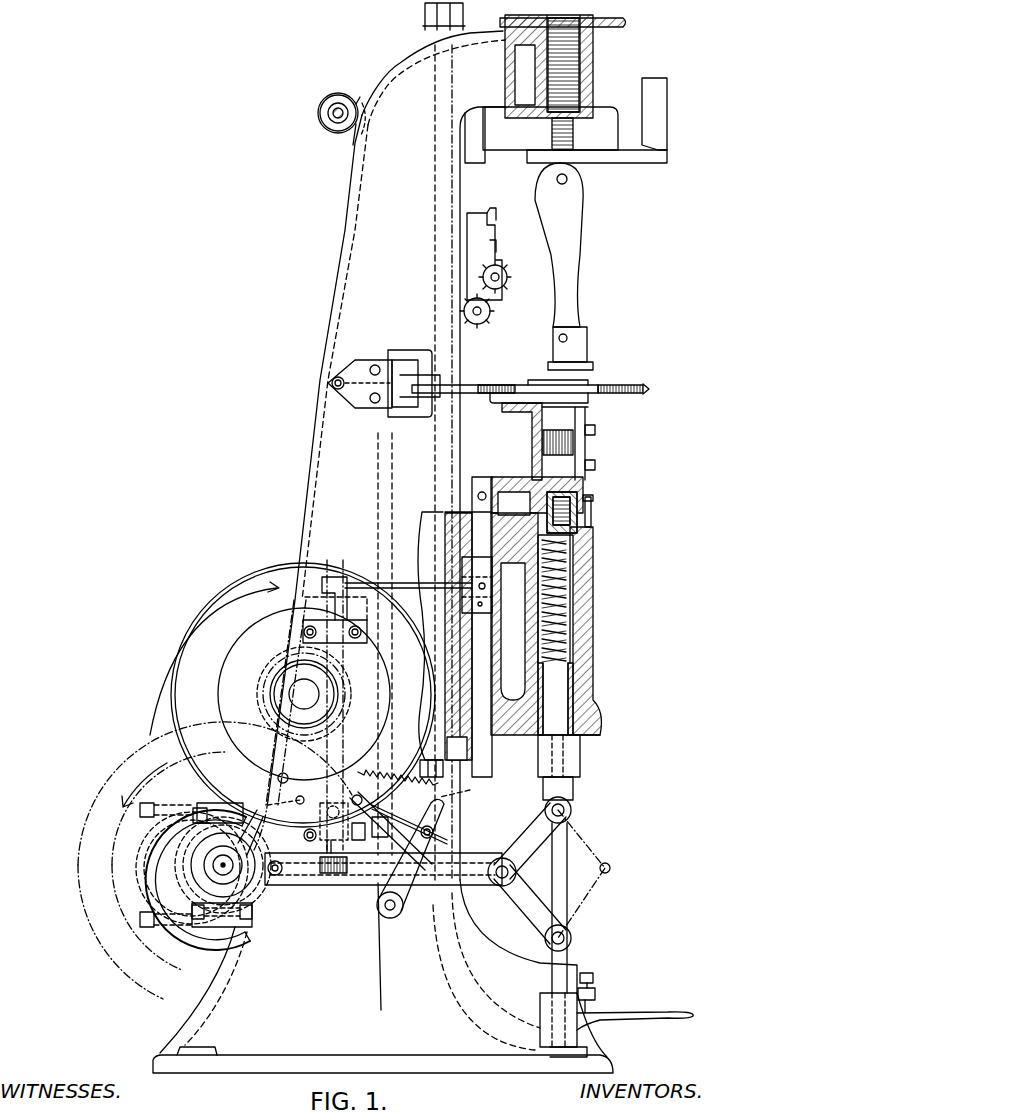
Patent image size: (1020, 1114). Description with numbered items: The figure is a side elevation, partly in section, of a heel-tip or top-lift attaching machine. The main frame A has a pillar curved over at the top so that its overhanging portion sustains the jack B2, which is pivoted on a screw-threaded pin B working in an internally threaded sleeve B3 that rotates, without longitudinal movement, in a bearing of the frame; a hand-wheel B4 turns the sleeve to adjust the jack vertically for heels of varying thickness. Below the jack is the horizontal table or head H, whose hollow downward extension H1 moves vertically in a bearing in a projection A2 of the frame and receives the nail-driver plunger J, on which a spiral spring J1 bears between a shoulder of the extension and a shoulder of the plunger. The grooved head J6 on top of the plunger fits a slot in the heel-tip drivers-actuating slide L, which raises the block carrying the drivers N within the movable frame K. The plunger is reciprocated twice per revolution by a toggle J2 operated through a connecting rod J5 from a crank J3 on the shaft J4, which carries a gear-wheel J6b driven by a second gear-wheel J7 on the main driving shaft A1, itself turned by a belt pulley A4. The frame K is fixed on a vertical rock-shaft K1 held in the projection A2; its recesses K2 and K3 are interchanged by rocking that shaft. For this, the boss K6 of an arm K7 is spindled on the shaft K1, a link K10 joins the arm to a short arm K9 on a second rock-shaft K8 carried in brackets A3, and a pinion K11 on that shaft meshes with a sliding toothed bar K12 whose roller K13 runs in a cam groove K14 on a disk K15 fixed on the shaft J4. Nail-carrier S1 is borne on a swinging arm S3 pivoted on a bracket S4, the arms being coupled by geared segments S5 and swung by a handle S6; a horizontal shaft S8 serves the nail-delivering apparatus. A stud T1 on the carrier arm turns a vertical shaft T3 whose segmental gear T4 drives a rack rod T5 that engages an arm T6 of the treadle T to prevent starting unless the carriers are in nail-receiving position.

The main frame A is at (340, 468).
The main driving shaft A1 is at (303, 694).
The projection from the main frame A2 is at (525, 707).
The brackets A3 is at (345, 628).
The pulley A4 is at (172, 683).
The screw-threaded pin B is at (576, 133).
The jack B2 is at (574, 243).
The internally threaded sleeve B3 is at (588, 74).
The hand-wheel B4 is at (626, 26).
The table or head H is at (586, 520).
The downward extension of the table H1 is at (590, 583).
The nail-driver plunger J is at (572, 753).
The spiral spring J1 is at (560, 653).
The toggle J2 is at (530, 903).
The crank J3 is at (160, 847).
The shaft J4 is at (213, 865).
The connecting rod J5 is at (477, 860).
The grooved head of the plunger J6 is at (587, 490).
The gear-wheel J6b is at (127, 760).
The second gear-wheel J7 is at (273, 657).
The movable frame K is at (532, 470).
The rock-shaft K1 is at (480, 512).
The vertical rectangular recess K2 is at (574, 438).
The vertical rectangular recess K3 is at (278, 872).
The boss of arm K7 K6 is at (494, 603).
The arm K7 is at (494, 572).
The second vertical rocking shaft K8 is at (330, 637).
The short arm K9 is at (330, 593).
The link K10 is at (470, 582).
The pinion K11 is at (340, 875).
The horizontal bar K12 is at (435, 867).
The roller K13 is at (279, 875).
The cam groove K14 is at (195, 938).
The disk K15 is at (250, 803).
The heel-tip drivers-actuating slide L is at (587, 475).
The drivers N is at (592, 455).
The nail-carrier S1 is at (600, 387).
The swinging arm S3 is at (470, 385).
The bracket S4 is at (336, 368).
The geared segments S5 is at (427, 355).
The handle S6 is at (640, 390).
The horizontal shaft S8 is at (328, 113).
The treadle T is at (614, 1013).
The horizontal stud T1 is at (340, 385).
The vertical shaft T3 is at (378, 433).
The segmental gear T4 is at (392, 918).
The horizontal sliding rod T5 is at (490, 780).
The arm of the treadle T6 is at (392, 964).